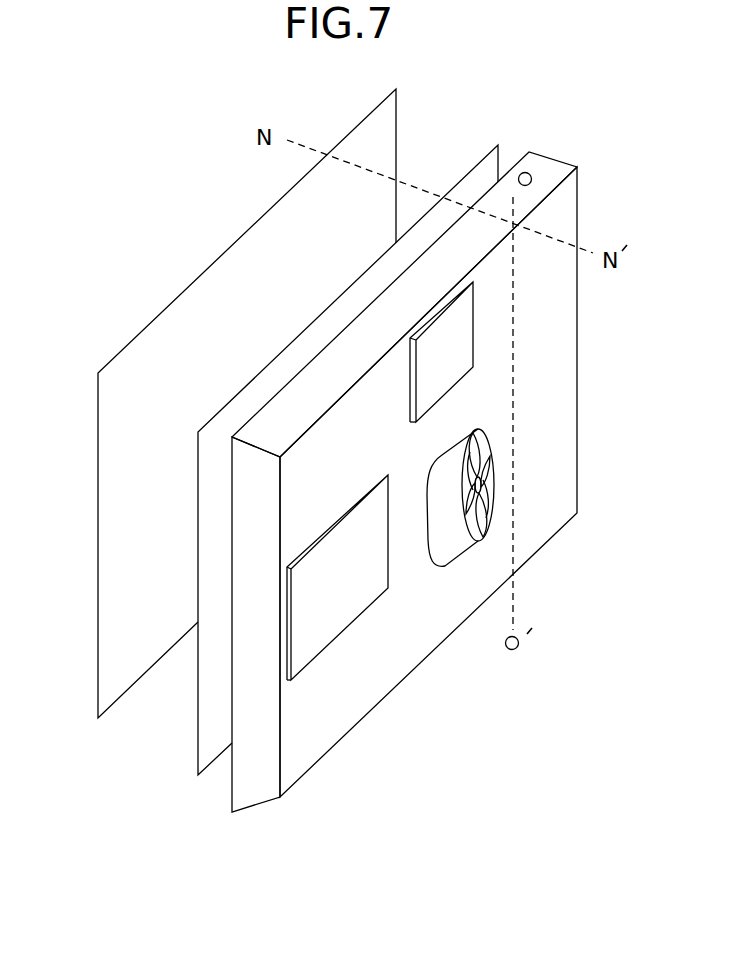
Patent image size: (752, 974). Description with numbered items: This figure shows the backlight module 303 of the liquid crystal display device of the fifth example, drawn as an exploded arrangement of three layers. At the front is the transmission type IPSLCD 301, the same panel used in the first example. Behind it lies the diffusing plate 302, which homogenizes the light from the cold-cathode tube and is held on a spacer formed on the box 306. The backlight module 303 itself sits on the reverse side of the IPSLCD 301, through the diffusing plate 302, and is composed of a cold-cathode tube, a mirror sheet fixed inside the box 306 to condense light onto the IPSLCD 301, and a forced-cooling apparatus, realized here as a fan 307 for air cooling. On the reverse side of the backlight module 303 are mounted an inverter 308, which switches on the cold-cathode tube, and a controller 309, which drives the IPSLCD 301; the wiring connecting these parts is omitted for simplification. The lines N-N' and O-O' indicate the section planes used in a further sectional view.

The transmission type IPSLCD 301 is at (234, 310).
The diffusing plate 302 is at (212, 738).
The backlight module 303 is at (336, 475).
The box 306 is at (272, 772).
The fan 307 is at (447, 548).
The inverter 308 is at (315, 613).
The controller 309 is at (453, 332).